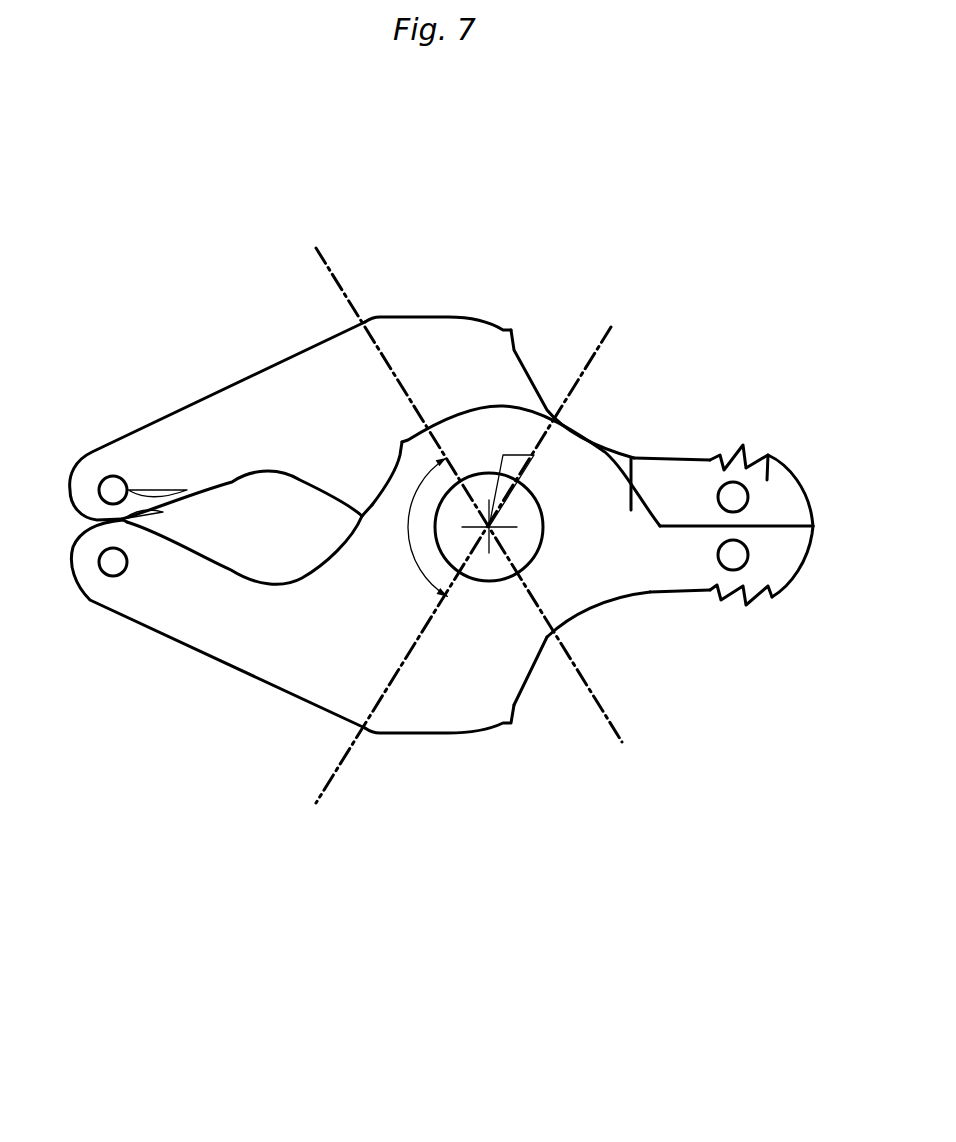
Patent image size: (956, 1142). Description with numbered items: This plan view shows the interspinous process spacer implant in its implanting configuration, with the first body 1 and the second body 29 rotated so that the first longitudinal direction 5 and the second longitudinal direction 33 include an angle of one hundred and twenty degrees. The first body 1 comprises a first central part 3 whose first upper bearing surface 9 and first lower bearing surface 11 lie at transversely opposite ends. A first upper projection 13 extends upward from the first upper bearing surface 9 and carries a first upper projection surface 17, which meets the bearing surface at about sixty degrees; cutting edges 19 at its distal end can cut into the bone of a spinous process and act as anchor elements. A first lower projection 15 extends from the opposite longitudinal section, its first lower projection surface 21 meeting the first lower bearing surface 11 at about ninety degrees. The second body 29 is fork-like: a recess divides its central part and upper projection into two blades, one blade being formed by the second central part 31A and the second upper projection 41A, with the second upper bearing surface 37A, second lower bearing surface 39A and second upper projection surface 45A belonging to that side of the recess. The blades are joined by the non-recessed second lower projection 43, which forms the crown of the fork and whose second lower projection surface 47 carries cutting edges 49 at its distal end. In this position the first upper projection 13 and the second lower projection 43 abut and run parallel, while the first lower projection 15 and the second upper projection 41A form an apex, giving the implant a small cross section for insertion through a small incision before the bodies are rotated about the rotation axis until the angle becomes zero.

The first body 1 is at (482, 258).
The first central part 3 is at (500, 368).
The first longitudinal direction 5 is at (325, 272).
The first upper bearing surface 9 is at (531, 386).
The first lower bearing surface 11 is at (357, 512).
The first upper projection 13 is at (683, 473).
The first lower projection 15 is at (198, 447).
The first upper projection surface 17 is at (650, 457).
The cutting edges 19 is at (768, 455).
The first lower projection surface 21 is at (232, 482).
The second body 29 is at (453, 820).
The second central part 31A is at (522, 640).
The second longitudinal direction 33 is at (584, 375).
The inner connecting edge 37A is at (380, 497).
The lower body side edge 39A is at (522, 687).
The second upper projection 41A is at (168, 598).
The second lower projection 43 is at (634, 575).
The lower opening edge 45A is at (290, 553).
The second lower projection surface 47 is at (680, 590).
The cutting edges 49 is at (771, 596).